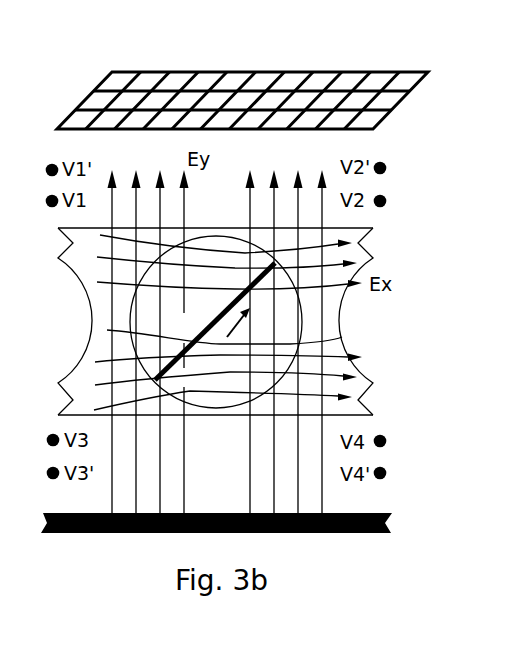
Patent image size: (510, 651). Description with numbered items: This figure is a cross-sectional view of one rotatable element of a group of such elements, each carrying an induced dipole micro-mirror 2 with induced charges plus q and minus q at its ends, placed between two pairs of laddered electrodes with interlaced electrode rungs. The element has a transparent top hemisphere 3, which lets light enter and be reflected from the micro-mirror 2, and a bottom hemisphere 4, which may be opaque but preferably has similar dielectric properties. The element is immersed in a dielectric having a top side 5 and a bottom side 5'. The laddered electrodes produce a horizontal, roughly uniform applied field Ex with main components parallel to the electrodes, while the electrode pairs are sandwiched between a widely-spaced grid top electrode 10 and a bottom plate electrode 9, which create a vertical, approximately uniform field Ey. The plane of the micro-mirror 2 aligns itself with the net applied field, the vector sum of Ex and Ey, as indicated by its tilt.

The grid top electrode 10 is at (100, 84).
The top side of dielectric 5 is at (215, 209).
The bottom side of dielectric 5' is at (215, 433).
The bottom hemisphere 4 is at (107, 330).
The top hemisphere 3 is at (342, 337).
The induced dipole micro-mirror 2 is at (216, 320).
The bottom plate electrode 9 is at (127, 533).